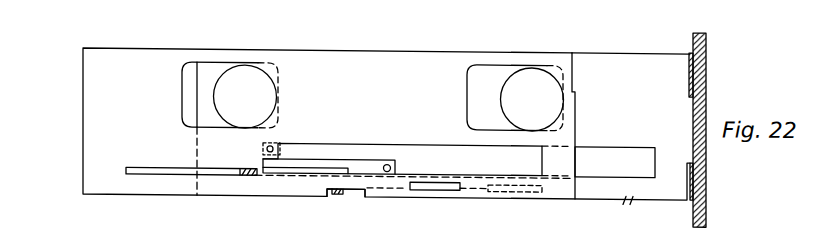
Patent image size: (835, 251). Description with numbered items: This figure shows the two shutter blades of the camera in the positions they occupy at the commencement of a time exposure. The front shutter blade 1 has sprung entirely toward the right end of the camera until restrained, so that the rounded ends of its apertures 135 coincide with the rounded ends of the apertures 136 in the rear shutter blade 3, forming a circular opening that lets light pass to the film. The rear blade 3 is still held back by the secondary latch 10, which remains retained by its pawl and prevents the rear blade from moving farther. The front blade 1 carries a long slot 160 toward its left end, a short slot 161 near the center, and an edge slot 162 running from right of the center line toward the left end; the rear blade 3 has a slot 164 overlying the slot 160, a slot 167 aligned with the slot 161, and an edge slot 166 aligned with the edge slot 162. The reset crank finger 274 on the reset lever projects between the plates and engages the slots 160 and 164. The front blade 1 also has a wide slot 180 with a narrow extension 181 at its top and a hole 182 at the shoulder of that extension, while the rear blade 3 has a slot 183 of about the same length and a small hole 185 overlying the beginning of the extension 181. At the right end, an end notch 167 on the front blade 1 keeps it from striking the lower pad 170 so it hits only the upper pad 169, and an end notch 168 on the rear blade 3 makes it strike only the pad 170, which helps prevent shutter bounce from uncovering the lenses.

The front shutter blade 1 is at (620, 62).
The rear shutter blade 3 is at (120, 55).
The secondary latch 10 is at (338, 194).
The apertures 135 is at (268, 93).
The apertures 136 is at (183, 91).
The long slot 160 is at (297, 171).
The short slot 161 is at (503, 180).
The edge slot 162 is at (400, 187).
The slot 164 is at (142, 167).
The edge slot 166 is at (355, 189).
The end notch 167 is at (443, 178).
The end notch 168 is at (575, 67).
The pad 169 is at (688, 47).
The pad 170 is at (690, 194).
The wide slot 180 is at (603, 148).
The narrow extension 181 is at (328, 148).
The hole 182 is at (391, 165).
The slot 183 is at (425, 147).
The small hole 185 is at (276, 144).
The reset crank finger 274 is at (248, 165).